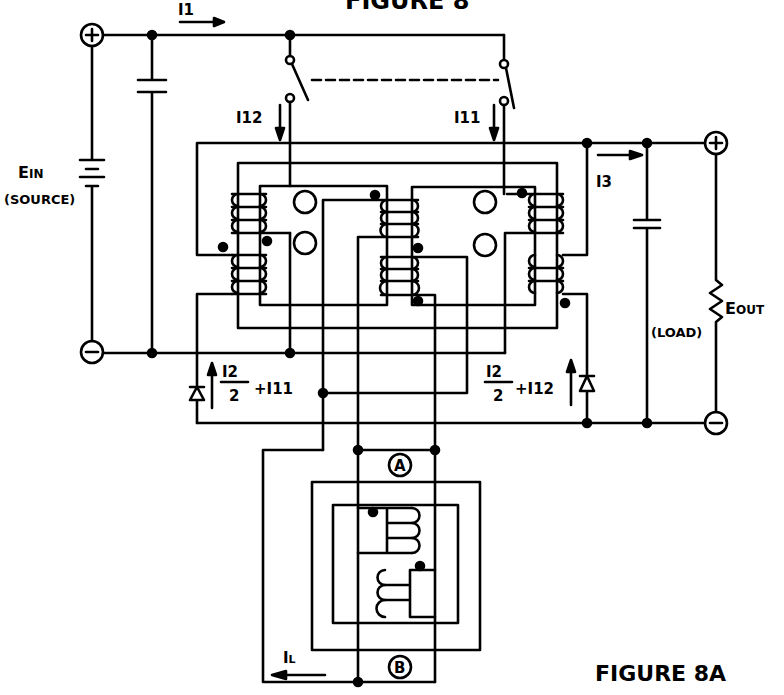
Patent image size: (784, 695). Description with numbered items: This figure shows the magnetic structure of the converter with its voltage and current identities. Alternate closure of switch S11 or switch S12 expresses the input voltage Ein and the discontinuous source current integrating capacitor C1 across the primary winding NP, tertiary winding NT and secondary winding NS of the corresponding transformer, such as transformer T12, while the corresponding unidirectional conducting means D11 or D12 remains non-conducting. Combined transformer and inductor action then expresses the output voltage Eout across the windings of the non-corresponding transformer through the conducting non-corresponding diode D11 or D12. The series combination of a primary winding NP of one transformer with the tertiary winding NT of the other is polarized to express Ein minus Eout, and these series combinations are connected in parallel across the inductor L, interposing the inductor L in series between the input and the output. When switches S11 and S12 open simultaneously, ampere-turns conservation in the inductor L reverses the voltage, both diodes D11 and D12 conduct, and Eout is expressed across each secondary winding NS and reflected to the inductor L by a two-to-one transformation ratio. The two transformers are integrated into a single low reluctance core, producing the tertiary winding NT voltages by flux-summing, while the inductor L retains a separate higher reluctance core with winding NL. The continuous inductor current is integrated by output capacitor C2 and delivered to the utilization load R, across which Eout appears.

The source current integrating capacitor C1 is at (164, 194).
The output capacitor C2 is at (633, 283).
The switch S11 is at (523, 114).
The switch S12 is at (282, 110).
The unidirectional conducting means D11 is at (606, 385).
The unidirectional conducting means D12 is at (177, 396).
The utilization load R is at (705, 283).
The inductor L is at (396, 566).
The transformer T12 is at (392, 412).
The secondary winding NS is at (218, 243).
The primary winding NP is at (273, 243).
The tertiary winding NT is at (392, 247).
The inductor winding NL is at (392, 562).